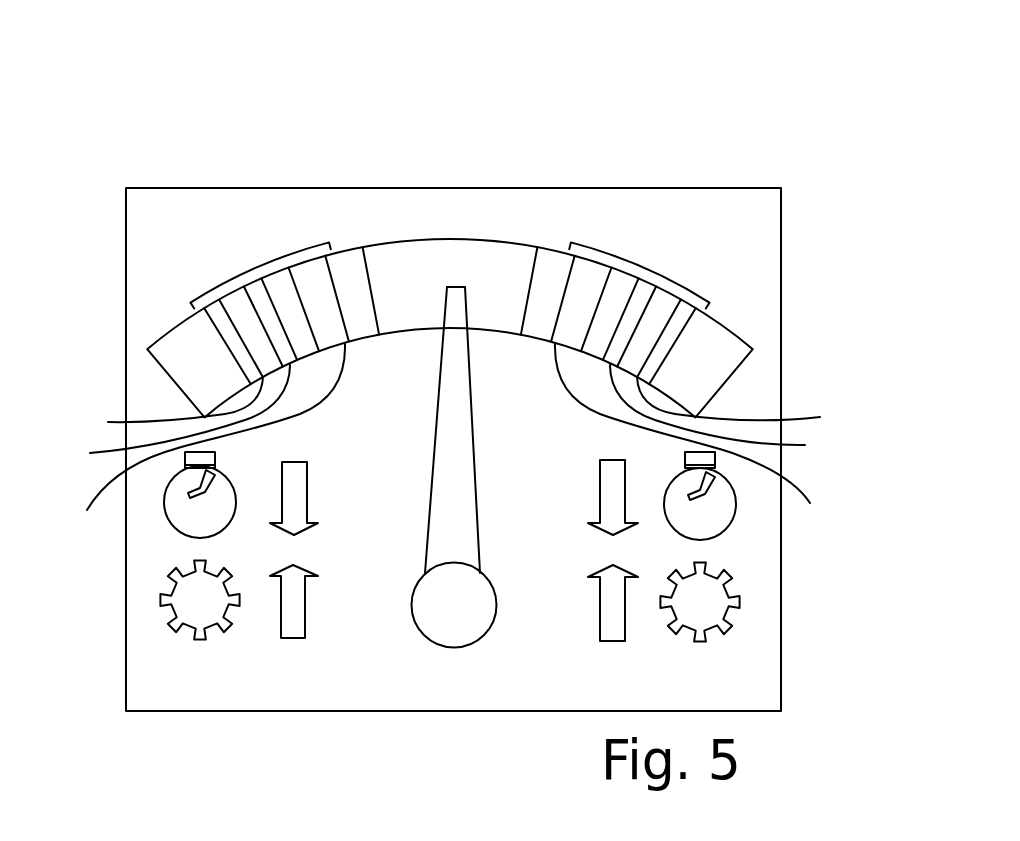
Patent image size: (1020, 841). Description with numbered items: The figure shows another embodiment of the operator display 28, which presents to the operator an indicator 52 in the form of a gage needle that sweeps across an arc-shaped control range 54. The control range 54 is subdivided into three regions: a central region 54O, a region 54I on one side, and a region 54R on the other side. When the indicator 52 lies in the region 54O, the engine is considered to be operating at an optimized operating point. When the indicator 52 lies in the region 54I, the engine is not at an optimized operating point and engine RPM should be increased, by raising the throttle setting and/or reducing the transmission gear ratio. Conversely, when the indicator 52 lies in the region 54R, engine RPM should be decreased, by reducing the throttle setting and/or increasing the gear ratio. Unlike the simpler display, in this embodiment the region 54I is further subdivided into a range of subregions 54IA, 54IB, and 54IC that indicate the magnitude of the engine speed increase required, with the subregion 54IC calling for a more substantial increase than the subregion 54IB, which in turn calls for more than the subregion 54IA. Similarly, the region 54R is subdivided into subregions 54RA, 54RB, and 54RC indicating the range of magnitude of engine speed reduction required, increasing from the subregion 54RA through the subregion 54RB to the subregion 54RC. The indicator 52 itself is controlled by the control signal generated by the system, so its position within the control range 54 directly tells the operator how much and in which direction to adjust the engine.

The operator display 28 is at (192, 143).
The control range 54 is at (808, 329).
The region 54O is at (455, 238).
The region 54R is at (260, 272).
The region 54I is at (646, 270).
The subregion 54RA is at (198, 444).
The subregion 54RB is at (158, 416).
The subregion 54RC is at (152, 405).
The subregion 54IA is at (695, 439).
The subregion 54IB is at (732, 411).
The subregion 54IC is at (753, 403).
The indicator 52 is at (477, 490).